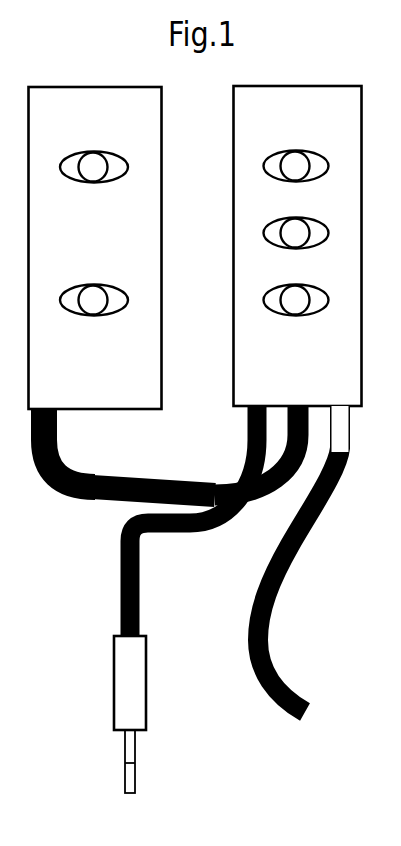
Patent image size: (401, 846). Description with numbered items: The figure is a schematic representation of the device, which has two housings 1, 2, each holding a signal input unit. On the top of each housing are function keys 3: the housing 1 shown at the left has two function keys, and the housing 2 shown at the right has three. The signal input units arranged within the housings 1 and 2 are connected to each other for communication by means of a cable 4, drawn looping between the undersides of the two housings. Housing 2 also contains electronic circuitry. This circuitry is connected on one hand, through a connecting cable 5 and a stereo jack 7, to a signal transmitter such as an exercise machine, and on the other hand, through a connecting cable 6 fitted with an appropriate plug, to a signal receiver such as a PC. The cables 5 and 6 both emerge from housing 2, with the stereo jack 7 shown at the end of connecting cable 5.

The housing 1 is at (147, 127).
The housing 2 is at (338, 125).
The function keys 3 is at (266, 298).
The cable 4 is at (95, 493).
The connecting cable 5 is at (118, 597).
The connecting cable 6 is at (278, 590).
The stereo jack 7 is at (125, 678).